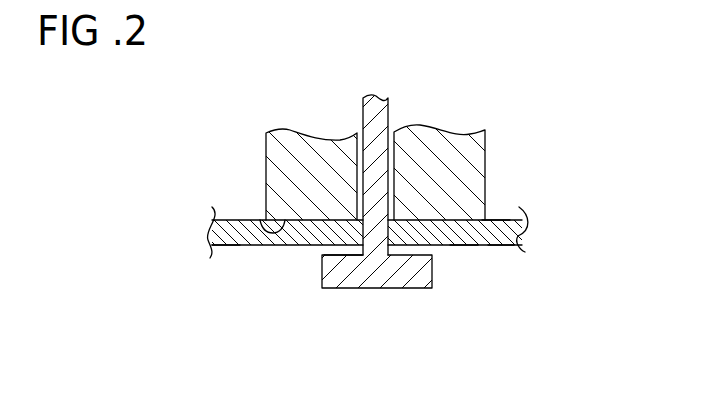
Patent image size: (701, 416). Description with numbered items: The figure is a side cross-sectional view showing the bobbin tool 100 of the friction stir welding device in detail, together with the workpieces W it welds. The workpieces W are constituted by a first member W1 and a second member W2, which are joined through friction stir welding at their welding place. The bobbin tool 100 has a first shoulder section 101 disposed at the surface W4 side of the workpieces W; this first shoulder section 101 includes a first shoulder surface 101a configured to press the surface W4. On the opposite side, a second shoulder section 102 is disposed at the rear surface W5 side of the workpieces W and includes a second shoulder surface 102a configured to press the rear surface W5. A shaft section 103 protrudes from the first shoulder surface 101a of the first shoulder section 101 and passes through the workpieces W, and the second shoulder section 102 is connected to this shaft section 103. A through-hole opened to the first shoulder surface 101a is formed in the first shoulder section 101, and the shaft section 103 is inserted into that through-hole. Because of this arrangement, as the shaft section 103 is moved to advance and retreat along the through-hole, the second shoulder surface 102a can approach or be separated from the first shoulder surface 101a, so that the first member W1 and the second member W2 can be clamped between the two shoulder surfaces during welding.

The bobbin tool 100 is at (480, 114).
The first shoulder section 101 is at (484, 136).
The first shoulder surface 101a is at (260, 218).
The second shoulder section 102 is at (375, 289).
The second shoulder surface 102a is at (332, 252).
The shaft section 103 is at (388, 111).
The workpieces W is at (526, 233).
The first member W1 is at (223, 246).
The second member W2 is at (463, 246).
The surface W4 is at (495, 219).
The rear surface W5 is at (500, 246).